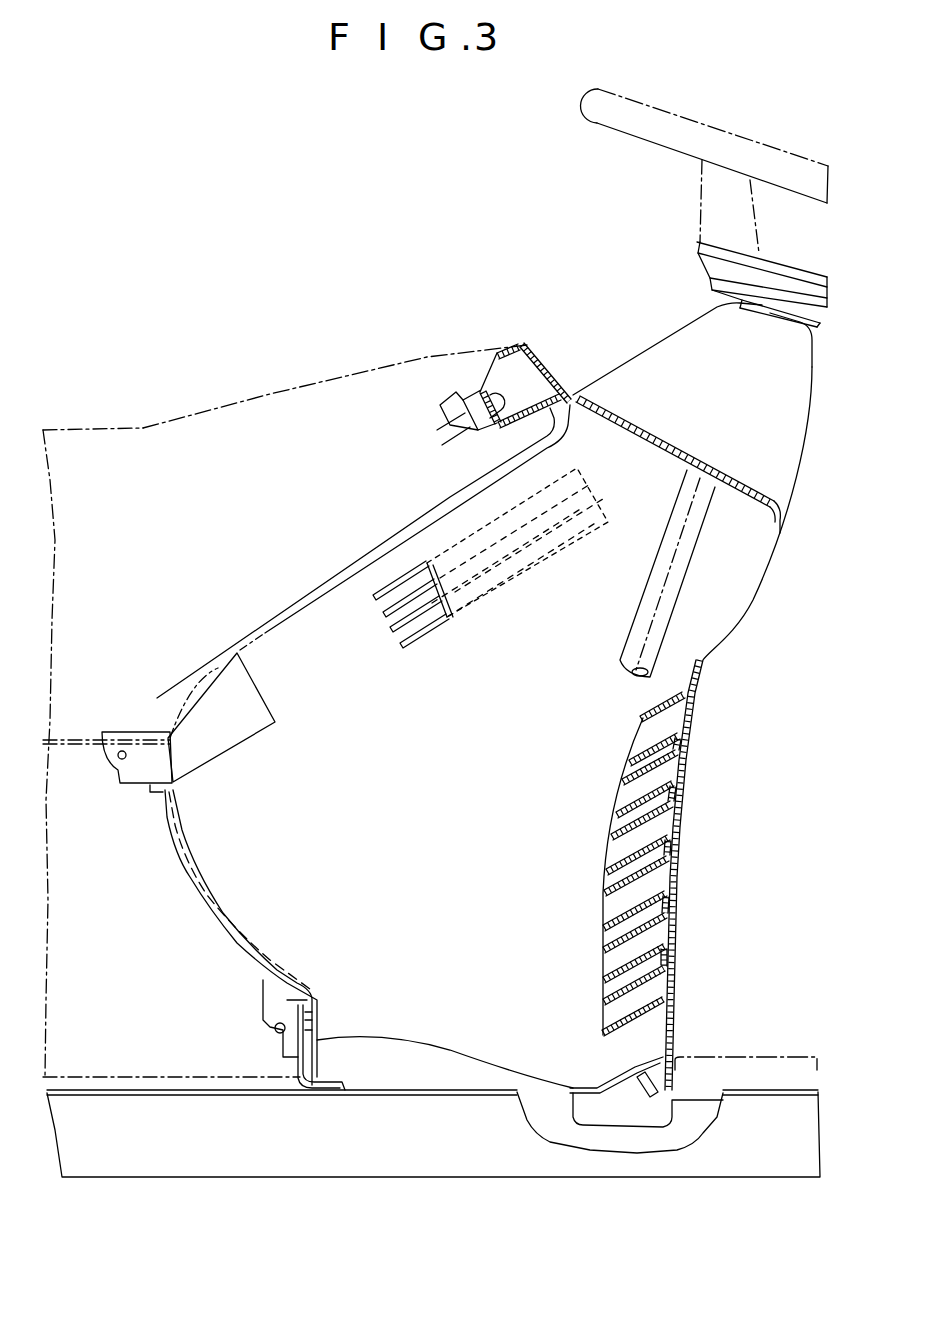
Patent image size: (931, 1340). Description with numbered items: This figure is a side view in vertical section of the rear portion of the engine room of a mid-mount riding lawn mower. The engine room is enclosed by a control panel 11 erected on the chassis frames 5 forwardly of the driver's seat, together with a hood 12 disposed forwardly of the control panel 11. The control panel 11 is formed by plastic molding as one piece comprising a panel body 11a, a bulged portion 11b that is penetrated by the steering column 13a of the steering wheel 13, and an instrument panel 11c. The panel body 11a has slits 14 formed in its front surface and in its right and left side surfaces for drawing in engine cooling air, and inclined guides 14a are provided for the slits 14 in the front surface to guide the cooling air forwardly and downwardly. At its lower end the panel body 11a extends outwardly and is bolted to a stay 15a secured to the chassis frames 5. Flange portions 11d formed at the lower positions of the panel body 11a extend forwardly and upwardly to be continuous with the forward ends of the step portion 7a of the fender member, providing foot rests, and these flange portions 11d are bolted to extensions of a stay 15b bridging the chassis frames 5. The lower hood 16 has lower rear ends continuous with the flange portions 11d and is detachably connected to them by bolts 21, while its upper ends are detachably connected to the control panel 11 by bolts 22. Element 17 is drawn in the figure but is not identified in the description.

The chassis frames 5 is at (385, 1170).
The step portion 7a is at (752, 1050).
The control panel 11 is at (308, 590).
The panel body 11a is at (703, 660).
The bulged portion 11b is at (688, 328).
The instrument panel 11c is at (658, 432).
The flange portions 11d is at (232, 915).
The hood 12 is at (317, 380).
The steering wheel 13 is at (726, 138).
The steering column 13a is at (687, 577).
The slits 14 is at (430, 620).
The inclined guides 14a is at (650, 947).
The stay 15a is at (625, 1068).
The stay 15b is at (297, 1068).
The lower hood 16 is at (120, 1067).
The cowl side panel 17 is at (182, 420).
The bolts 21 is at (272, 1033).
The bolts 22 is at (115, 760).